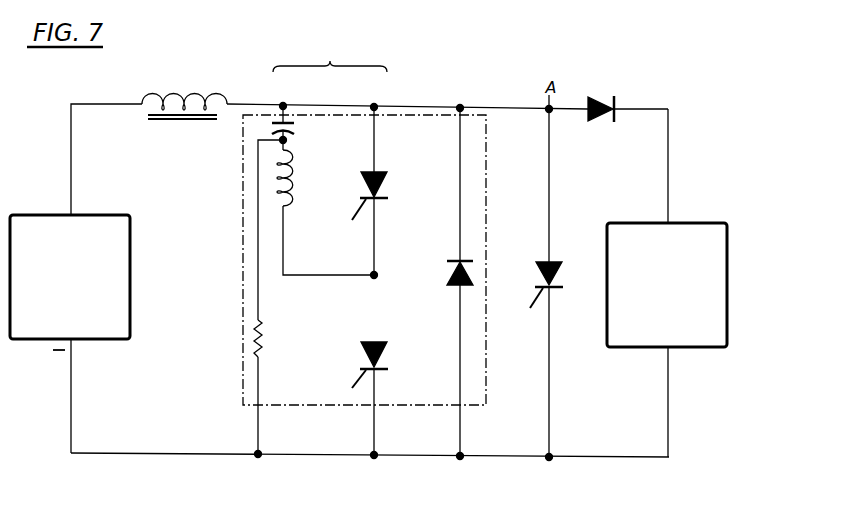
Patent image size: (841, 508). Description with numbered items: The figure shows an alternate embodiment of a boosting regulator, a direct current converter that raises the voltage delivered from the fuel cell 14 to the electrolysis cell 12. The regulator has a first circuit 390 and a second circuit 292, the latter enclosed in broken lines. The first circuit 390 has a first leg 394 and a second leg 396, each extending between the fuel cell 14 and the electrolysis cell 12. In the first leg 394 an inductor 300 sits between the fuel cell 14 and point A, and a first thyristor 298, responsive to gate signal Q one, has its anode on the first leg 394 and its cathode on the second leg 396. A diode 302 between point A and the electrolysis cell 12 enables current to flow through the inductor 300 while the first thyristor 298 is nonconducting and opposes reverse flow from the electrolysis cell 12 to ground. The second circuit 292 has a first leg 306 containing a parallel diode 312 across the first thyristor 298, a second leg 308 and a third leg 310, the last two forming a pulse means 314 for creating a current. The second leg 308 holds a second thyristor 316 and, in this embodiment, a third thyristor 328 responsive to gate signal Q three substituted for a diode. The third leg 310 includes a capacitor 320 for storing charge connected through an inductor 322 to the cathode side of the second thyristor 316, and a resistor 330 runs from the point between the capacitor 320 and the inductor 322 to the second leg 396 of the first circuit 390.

The electrolysis cell 12 is at (688, 224).
The fuel cell 14 is at (92, 214).
The second circuit 292 is at (241, 393).
The first thyristor 298 is at (560, 278).
The inductor 300 is at (170, 92).
The diode 302 is at (608, 122).
The first leg 306 is at (456, 322).
The second leg 308 is at (377, 118).
The third leg 310 is at (283, 106).
The parallel diode 312 is at (447, 266).
The pulse means 314 is at (330, 107).
The second thyristor 316 is at (384, 192).
The capacitor 320 is at (298, 130).
The inductor 322 is at (292, 170).
The third thyristor 328 is at (388, 358).
The resistor 330 is at (263, 337).
The first circuit 390 is at (570, 98).
The first leg 394 is at (110, 101).
The second leg 396 is at (125, 457).